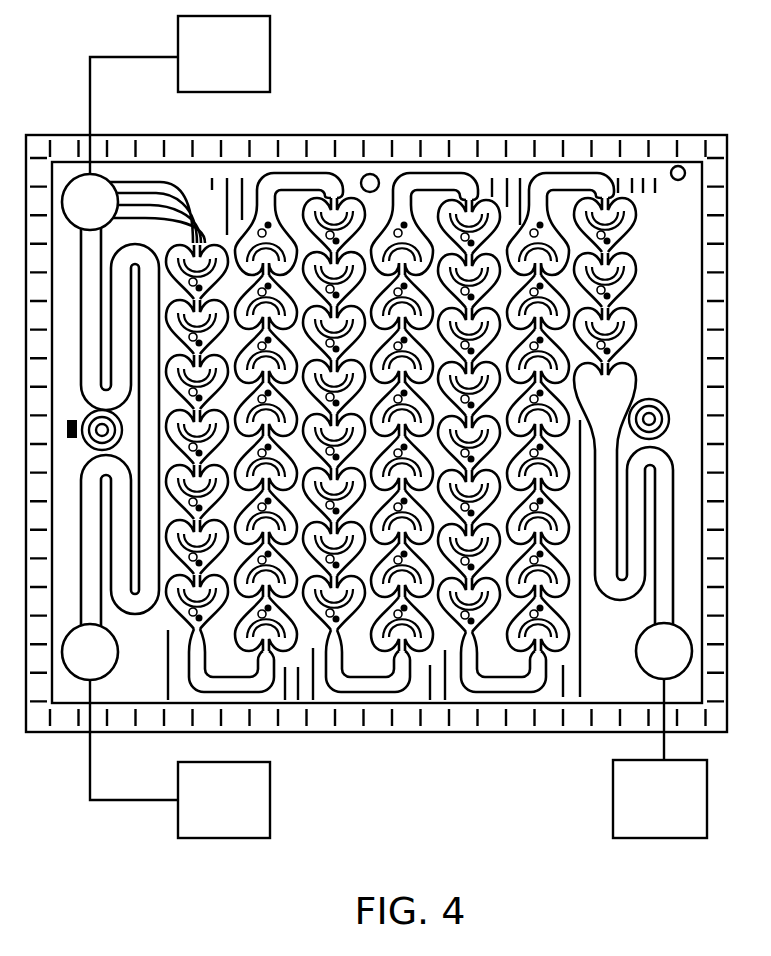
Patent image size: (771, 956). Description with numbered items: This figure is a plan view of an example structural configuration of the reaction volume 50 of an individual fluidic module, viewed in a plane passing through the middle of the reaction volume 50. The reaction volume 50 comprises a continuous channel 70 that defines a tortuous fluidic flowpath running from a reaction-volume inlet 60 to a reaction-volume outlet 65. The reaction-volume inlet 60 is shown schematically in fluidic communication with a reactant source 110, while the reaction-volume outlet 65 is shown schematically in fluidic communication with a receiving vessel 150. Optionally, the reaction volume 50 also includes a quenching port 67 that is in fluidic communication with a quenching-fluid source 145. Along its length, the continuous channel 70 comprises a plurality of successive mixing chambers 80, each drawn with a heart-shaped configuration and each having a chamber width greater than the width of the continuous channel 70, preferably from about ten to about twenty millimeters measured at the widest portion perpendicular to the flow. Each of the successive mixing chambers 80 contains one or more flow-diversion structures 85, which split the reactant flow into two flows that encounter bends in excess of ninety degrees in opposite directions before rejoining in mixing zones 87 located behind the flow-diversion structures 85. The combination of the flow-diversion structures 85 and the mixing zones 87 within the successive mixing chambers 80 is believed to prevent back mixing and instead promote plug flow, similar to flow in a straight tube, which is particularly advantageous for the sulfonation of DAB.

The reaction volume 50 is at (523, 60).
The reaction-volume inlet 60 is at (92, 212).
The reaction-volume outlet 65 is at (670, 666).
The quenching port 67 is at (90, 668).
The continuous channel 70 is at (247, 685).
The successive mixing chambers 80 is at (287, 226).
The flow-diversion structures 85 is at (470, 612).
The mixing zones 87 is at (345, 607).
The reactant source 110 is at (208, 67).
The quenching-fluid source 145 is at (208, 813).
The receiving vessel 150 is at (644, 812).